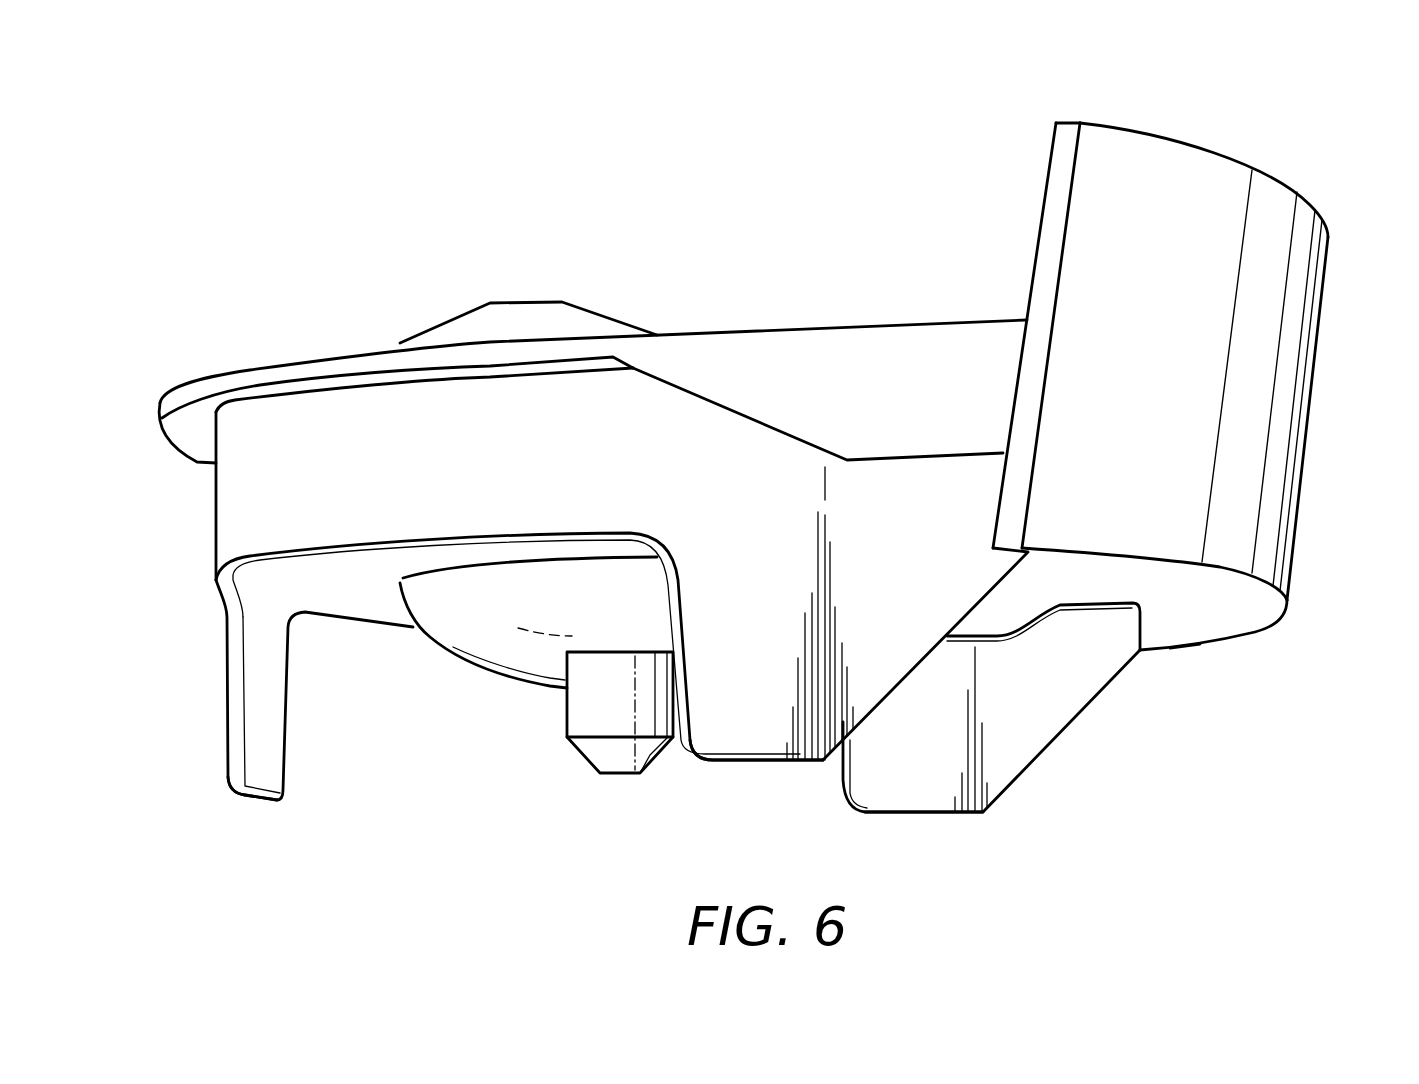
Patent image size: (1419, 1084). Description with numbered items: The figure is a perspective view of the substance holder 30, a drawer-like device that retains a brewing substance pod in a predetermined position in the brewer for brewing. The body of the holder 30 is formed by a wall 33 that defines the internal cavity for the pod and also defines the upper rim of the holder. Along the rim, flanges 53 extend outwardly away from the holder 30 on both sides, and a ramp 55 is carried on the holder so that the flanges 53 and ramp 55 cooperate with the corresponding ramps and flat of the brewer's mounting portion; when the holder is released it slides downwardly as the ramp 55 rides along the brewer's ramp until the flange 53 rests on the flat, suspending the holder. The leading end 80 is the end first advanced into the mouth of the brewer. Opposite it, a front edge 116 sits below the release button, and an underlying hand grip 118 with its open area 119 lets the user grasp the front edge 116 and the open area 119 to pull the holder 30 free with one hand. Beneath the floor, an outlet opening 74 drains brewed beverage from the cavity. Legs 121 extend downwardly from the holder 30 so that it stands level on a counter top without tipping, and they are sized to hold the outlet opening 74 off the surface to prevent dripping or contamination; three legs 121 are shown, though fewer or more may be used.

The substance holder 30 is at (1257, 152).
The wall 33 is at (473, 643).
The flange 53 is at (343, 362).
The ramp 55 is at (760, 423).
The outlet opening 74 is at (647, 748).
The leading end 80 is at (212, 497).
The front edge 116 is at (1300, 507).
The hand grip 118 is at (1178, 646).
The open area 119 is at (1203, 605).
The legs 121 is at (255, 790).